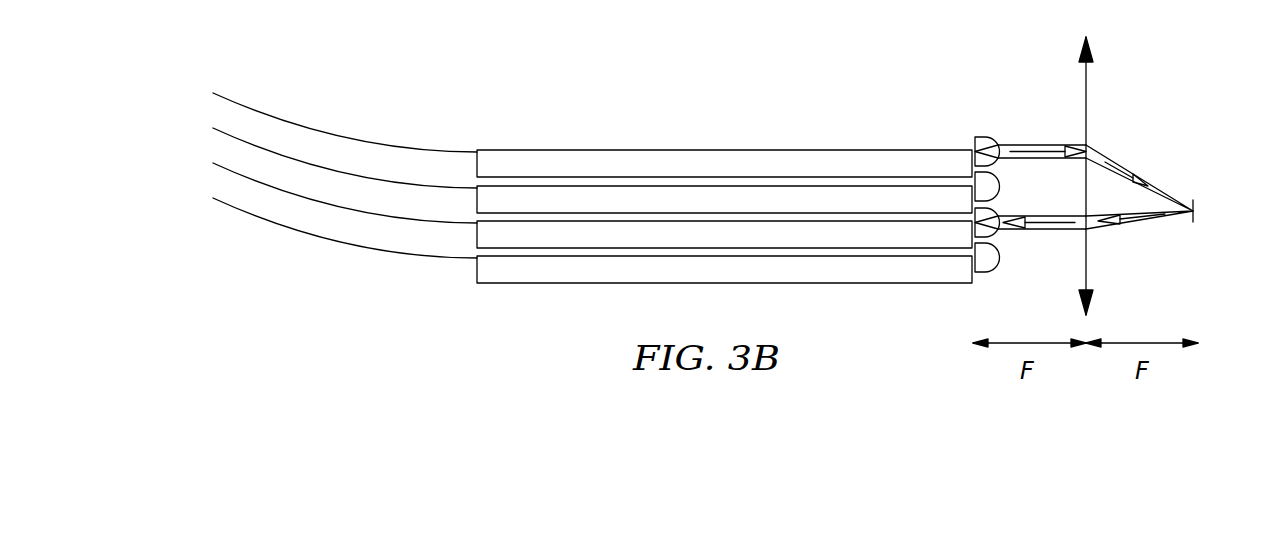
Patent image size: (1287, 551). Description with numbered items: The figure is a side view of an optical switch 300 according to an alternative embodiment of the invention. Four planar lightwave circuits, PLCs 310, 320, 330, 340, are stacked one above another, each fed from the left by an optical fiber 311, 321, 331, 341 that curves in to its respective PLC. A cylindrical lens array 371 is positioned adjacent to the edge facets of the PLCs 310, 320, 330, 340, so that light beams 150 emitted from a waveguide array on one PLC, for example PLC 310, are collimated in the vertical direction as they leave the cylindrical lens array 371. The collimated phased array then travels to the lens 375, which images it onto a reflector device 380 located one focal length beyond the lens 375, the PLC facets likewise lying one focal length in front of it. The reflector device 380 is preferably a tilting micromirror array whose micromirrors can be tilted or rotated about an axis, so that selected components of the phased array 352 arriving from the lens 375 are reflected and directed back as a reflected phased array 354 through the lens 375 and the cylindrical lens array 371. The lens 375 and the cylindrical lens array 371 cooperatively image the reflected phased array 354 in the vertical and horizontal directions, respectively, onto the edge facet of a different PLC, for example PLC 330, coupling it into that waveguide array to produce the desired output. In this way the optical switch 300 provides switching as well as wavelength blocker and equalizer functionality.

The optical switch 300 is at (527, 124).
The PLC 310 is at (477, 166).
The PLC 320 is at (477, 202).
The PLC 330 is at (477, 237).
The PLC 340 is at (477, 272).
The optical fiber 311 is at (222, 96).
The optical fiber 321 is at (222, 131).
The optical fiber 331 is at (222, 166).
The optical fiber 341 is at (222, 201).
The cylindrical lens array 371 is at (983, 136).
The light beams 150 is at (1044, 144).
The phased array 352 is at (1110, 160).
The reflected phased array 354 is at (1142, 221).
The lens 375 is at (1089, 62).
The reflector device 380 is at (1190, 194).